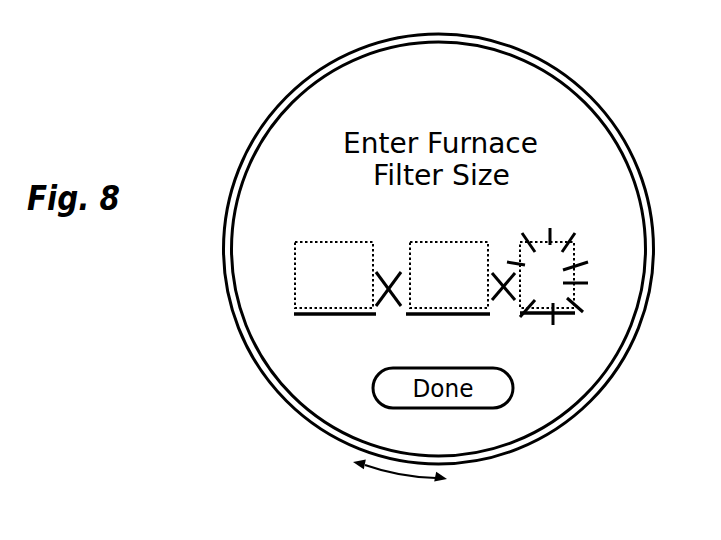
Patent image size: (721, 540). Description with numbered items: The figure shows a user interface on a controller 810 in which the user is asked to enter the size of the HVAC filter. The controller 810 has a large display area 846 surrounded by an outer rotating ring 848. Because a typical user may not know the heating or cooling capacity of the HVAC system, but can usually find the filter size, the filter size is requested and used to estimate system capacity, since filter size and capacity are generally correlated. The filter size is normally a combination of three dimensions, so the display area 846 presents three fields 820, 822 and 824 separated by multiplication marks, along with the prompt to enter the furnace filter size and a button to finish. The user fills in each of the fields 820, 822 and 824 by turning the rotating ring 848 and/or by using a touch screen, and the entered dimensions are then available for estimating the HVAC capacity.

The controller 810 is at (250, 96).
The first filter size field 820 is at (291, 289).
The second filter size field 822 is at (437, 240).
The third filter size field 824 is at (531, 233).
The display area 846 is at (528, 88).
The outer rotating ring 848 is at (330, 430).